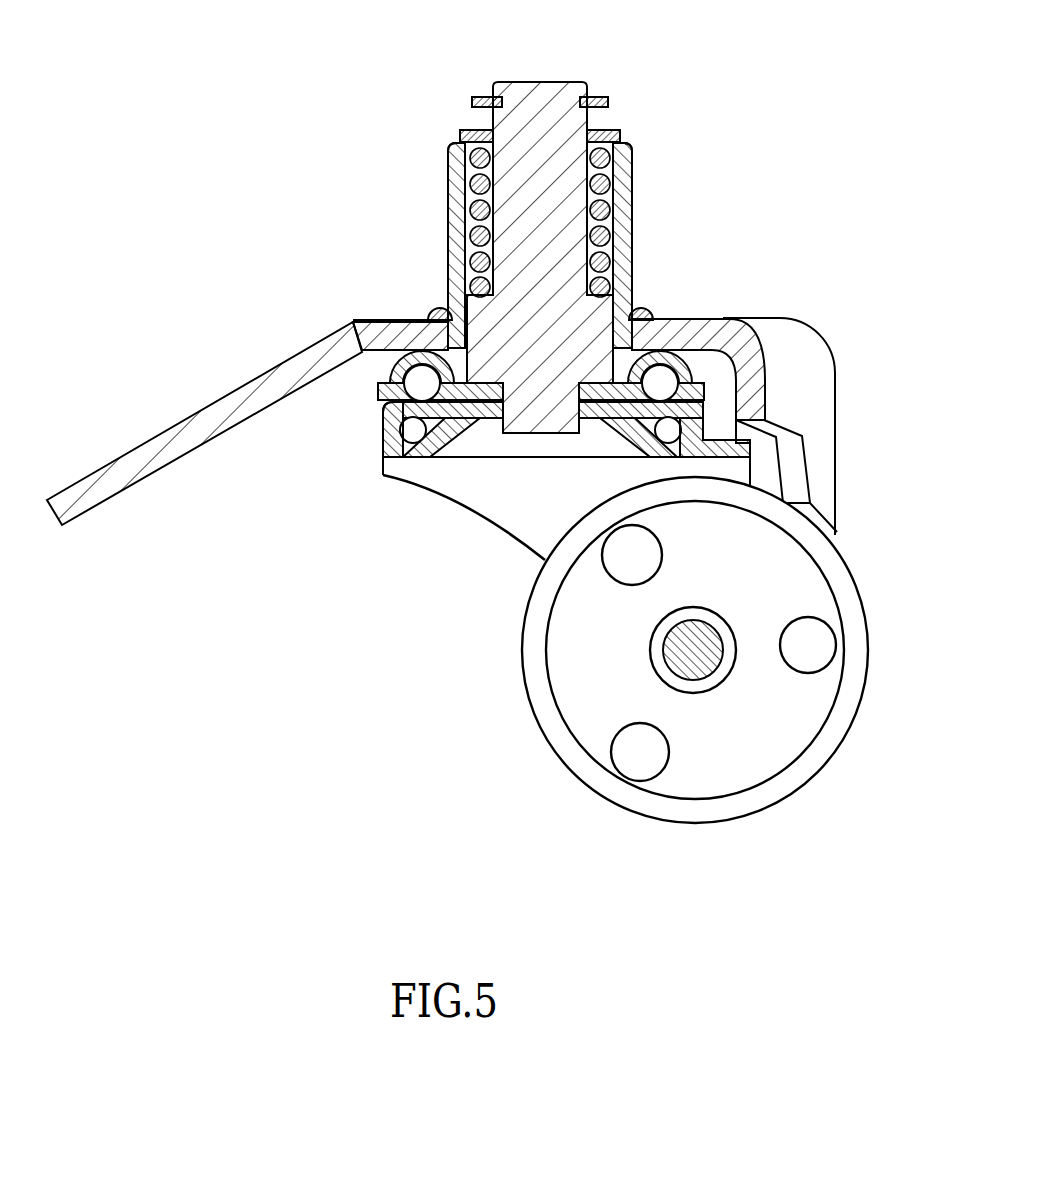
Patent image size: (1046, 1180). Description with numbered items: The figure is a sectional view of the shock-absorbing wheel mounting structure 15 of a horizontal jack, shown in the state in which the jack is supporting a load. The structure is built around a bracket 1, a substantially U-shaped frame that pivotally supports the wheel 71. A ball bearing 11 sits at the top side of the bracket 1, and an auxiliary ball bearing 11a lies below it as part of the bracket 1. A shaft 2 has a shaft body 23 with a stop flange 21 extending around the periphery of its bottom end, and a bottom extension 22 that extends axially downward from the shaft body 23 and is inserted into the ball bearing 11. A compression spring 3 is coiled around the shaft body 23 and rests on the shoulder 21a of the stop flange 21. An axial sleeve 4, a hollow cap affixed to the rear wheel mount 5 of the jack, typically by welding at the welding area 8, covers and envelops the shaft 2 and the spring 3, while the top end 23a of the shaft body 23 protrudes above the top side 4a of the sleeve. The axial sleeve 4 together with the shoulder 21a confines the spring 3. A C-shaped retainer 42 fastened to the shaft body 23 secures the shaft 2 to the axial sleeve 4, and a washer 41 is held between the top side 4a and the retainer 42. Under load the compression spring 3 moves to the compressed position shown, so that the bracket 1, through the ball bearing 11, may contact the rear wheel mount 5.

The bracket 1 is at (528, 522).
The shaft 2 is at (552, 82).
The compression spring 3 is at (600, 238).
The axial sleeve 4 is at (633, 267).
The top side of the axial sleeve 4a is at (458, 135).
The rear wheel mount 5 is at (223, 397).
The welding area 8 is at (650, 308).
The ball bearing 11 is at (397, 358).
The auxiliary ball bearing 11a is at (393, 457).
The shock-absorbing wheel mounting structure 15 is at (430, 698).
The stop flange 21 is at (420, 320).
The shoulder 21a is at (450, 267).
The bottom extension 22 is at (513, 433).
The shaft body 23 is at (505, 193).
The top end of the shaft body 23a is at (590, 112).
The washer 41 is at (620, 135).
The C-shaped retainer 42 is at (475, 97).
The wheel 71 is at (860, 600).